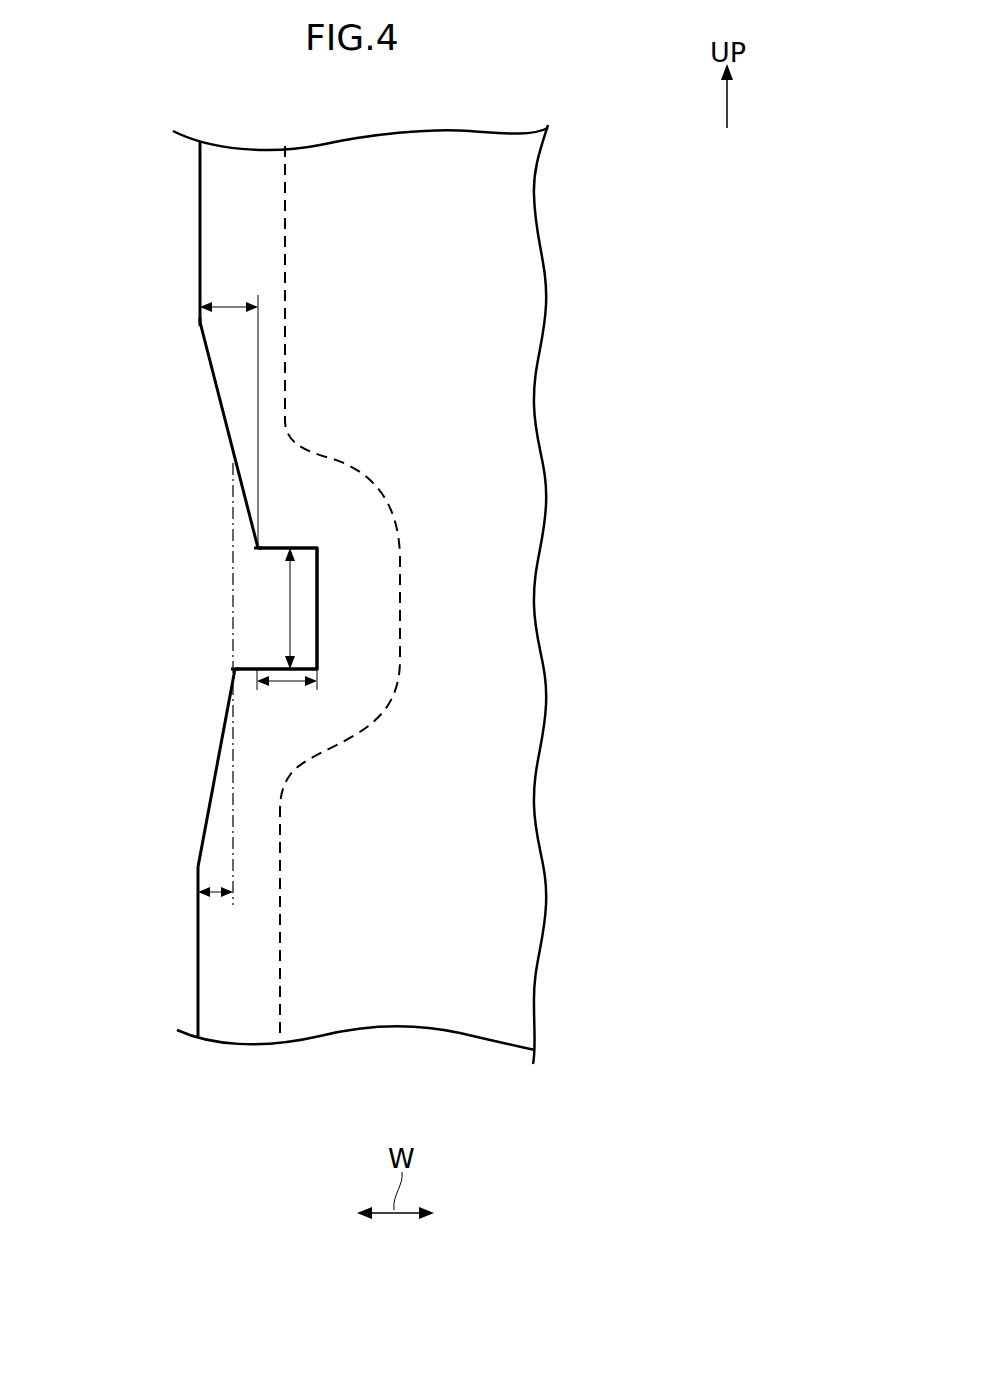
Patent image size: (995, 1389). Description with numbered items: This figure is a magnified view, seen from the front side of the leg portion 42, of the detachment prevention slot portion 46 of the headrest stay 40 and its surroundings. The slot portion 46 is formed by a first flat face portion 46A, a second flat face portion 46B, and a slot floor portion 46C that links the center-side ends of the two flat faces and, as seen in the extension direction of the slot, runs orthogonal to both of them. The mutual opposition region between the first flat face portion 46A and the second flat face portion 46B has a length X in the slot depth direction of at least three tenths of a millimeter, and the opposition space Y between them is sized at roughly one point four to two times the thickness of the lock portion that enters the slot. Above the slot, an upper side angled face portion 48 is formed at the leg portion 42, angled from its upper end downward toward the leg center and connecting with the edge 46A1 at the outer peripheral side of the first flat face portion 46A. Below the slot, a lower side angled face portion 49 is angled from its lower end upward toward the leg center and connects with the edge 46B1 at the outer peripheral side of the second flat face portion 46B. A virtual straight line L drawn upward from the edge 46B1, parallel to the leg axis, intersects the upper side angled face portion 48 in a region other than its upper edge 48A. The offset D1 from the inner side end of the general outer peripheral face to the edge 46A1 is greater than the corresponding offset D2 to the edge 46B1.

The headrest stay 40 is at (150, 163).
The leg portion 42 is at (185, 236).
The upper side angled face portion 48 is at (205, 399).
The upper edge 48A is at (198, 352).
The lower side angled face portion 49 is at (213, 768).
The detachment prevention slot portion 46 is at (255, 627).
The first flat face portion 46A is at (274, 560).
The edge 46A1 is at (254, 553).
The second flat face portion 46B is at (265, 655).
The edge 46B1 is at (232, 665).
The slot floor portion 46C is at (317, 616).
The virtual straight line L is at (233, 512).
The offset D1 is at (232, 303).
The offset D2 is at (217, 897).
The length in slot depth direction X is at (283, 684).
The opposition space Y is at (288, 603).